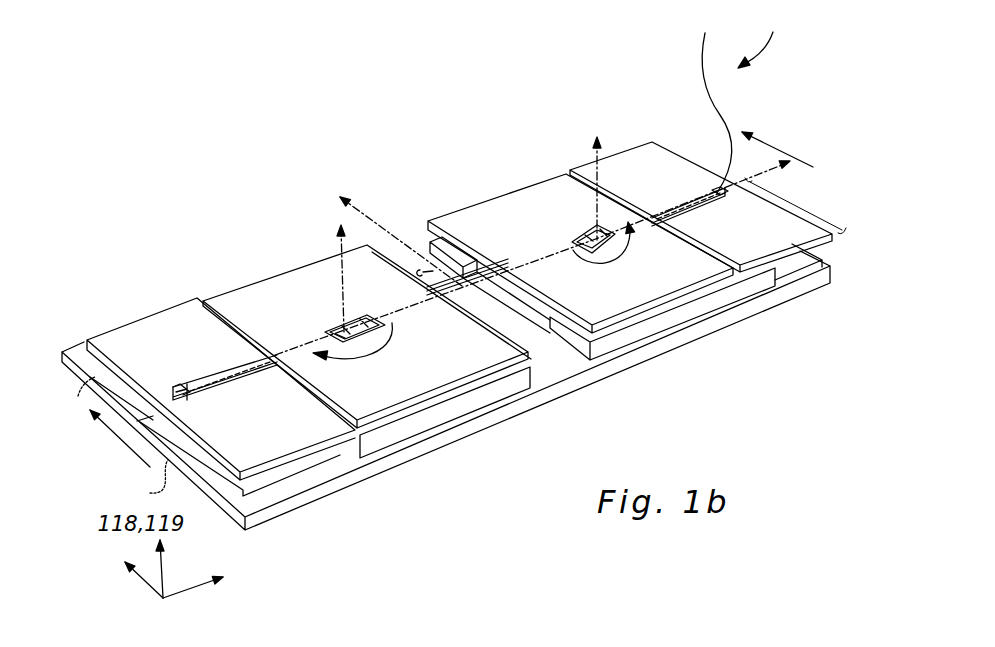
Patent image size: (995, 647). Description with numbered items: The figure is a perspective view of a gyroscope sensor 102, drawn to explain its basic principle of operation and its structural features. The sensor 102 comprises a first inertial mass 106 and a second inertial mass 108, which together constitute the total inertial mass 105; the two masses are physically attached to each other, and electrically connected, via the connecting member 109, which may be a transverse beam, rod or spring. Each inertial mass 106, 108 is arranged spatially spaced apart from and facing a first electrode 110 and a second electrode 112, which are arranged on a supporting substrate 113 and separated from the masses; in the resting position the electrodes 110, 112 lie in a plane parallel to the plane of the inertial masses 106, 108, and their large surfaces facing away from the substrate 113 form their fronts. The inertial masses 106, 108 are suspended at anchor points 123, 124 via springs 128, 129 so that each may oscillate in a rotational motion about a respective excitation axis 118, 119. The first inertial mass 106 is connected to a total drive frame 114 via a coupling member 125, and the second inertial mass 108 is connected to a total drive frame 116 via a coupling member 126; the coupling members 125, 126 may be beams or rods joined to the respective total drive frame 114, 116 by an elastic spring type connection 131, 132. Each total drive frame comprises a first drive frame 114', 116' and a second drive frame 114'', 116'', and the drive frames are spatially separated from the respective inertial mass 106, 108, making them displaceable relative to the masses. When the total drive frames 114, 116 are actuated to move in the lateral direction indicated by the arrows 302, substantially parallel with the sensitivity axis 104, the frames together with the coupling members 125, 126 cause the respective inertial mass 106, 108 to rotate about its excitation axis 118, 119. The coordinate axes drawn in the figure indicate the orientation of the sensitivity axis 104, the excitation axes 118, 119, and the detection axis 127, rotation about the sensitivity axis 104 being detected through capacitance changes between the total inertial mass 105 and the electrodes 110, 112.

The gyroscope sensor 102 is at (768, 36).
The sensitivity axis 104 is at (377, 217).
The total inertial mass 105 is at (443, 365).
The first inertial mass 106 is at (523, 207).
The second inertial mass 108 is at (277, 288).
The connecting member 109 is at (485, 278).
The first electrode 110 is at (445, 240).
The second electrode 112 is at (672, 323).
The supporting substrate 113 is at (737, 315).
The total drive frame 114 is at (701, 169).
The first drive frame 114' is at (708, 103).
The second drive frame 114'' is at (795, 203).
The total drive frame 116 is at (221, 376).
The first drive frame 116' is at (69, 396).
The second drive frame 116'' is at (132, 483).
The excitation axis 118 is at (590, 143).
The excitation axis 119 is at (337, 218).
The anchor point 123 is at (342, 327).
The anchor point 124 is at (602, 232).
The coupling member 125 is at (695, 205).
The coupling member 126 is at (240, 380).
The detection axis 127 is at (751, 182).
The spring 128 is at (363, 318).
The spring 129 is at (580, 244).
The spring type connection 131 is at (720, 193).
The spring type connection 132 is at (185, 389).
The arrows 302 is at (808, 137).